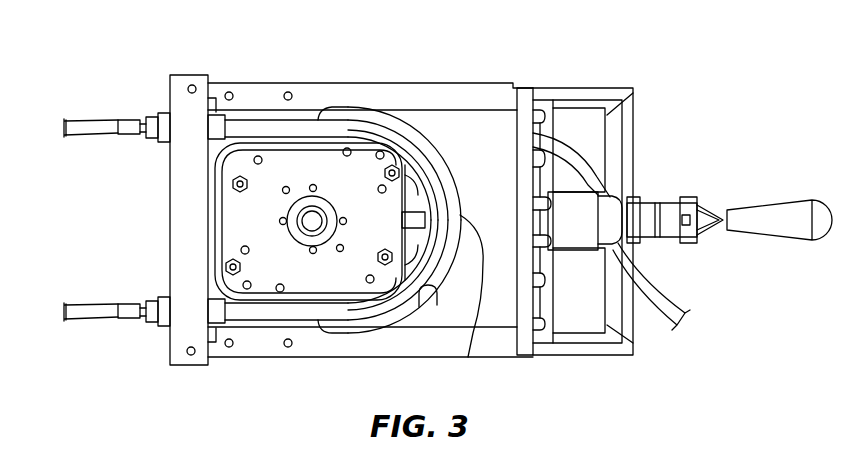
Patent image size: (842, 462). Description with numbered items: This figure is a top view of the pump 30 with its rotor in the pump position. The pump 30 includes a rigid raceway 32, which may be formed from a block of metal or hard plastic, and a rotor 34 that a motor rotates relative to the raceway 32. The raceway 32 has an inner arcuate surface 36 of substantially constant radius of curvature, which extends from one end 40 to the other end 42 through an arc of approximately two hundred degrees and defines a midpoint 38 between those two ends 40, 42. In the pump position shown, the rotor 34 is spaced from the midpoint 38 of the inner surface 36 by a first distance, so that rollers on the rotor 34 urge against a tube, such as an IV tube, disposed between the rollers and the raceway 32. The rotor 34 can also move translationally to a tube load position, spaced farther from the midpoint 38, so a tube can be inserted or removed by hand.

The pump 30 is at (576, 53).
The raceway 32 is at (462, 113).
The rotor 34 is at (363, 170).
The inner arcuate surface 36 is at (426, 310).
The midpoint 38 is at (468, 357).
The end 40 is at (320, 108).
The end 42 is at (320, 333).